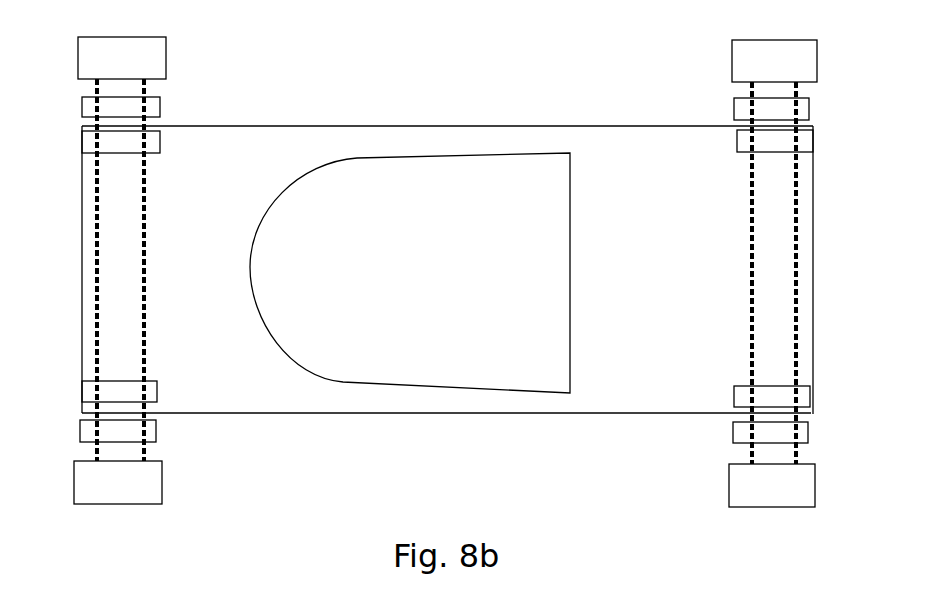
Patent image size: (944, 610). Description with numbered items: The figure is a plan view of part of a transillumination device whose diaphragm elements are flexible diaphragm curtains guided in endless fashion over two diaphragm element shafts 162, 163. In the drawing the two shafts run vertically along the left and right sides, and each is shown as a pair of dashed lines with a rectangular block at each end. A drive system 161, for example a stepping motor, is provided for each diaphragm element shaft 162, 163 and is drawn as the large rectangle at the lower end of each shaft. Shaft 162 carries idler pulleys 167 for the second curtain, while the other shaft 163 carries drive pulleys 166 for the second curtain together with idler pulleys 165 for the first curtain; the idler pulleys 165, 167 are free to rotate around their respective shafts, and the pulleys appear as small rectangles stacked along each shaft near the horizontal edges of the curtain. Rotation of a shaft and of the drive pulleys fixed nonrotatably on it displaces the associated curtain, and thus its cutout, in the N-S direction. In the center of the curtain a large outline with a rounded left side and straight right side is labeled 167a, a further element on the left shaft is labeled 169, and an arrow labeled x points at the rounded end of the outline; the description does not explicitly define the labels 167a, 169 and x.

The drive system 161 is at (152, 487).
The diaphragm element shaft 162 is at (140, 87).
The diaphragm element shaft 163 is at (762, 89).
The idler pulleys 165 is at (805, 139).
The drive pulleys 166 is at (810, 108).
The idler pulleys 167 is at (82, 106).
The recess 167a is at (448, 200).
The left guide element 169 is at (87, 141).
The direction x is at (252, 272).